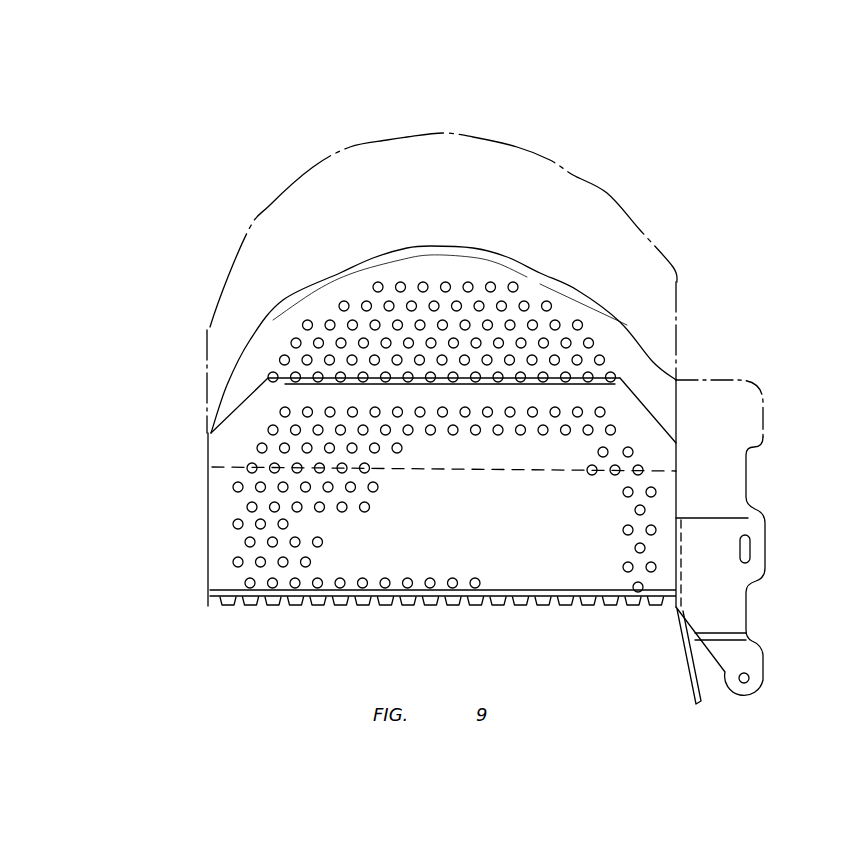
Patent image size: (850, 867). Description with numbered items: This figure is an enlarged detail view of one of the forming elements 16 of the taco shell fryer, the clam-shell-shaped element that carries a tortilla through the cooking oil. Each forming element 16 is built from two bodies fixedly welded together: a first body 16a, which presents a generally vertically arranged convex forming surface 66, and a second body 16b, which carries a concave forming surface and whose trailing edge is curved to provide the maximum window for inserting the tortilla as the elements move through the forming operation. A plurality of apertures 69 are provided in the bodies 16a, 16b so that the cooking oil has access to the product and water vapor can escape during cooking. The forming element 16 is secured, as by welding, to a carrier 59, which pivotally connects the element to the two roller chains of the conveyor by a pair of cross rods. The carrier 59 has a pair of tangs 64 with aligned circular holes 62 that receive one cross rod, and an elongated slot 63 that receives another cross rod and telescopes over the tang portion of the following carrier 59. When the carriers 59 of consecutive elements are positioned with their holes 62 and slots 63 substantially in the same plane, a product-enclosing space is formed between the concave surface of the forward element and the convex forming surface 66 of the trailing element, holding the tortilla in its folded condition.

The forming element 16 is at (522, 148).
The first body 16a is at (215, 499).
The second body 16b is at (240, 378).
The carrier 59 is at (768, 412).
The circular hole 62 is at (739, 672).
The elongated slot 63 is at (735, 534).
The tang 64 is at (718, 677).
The convex forming surface 66 is at (480, 529).
The aperture 69 is at (583, 325).